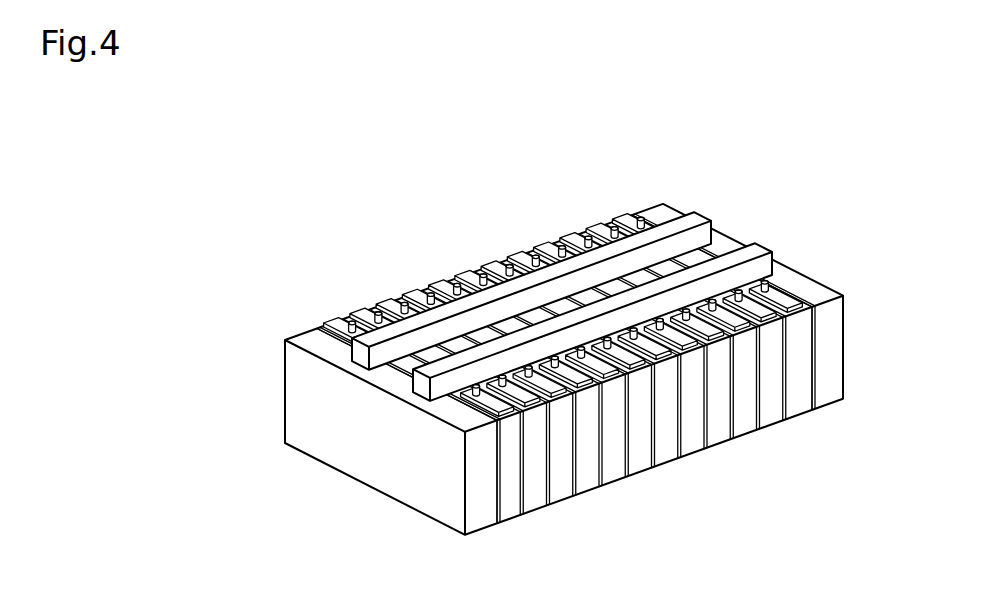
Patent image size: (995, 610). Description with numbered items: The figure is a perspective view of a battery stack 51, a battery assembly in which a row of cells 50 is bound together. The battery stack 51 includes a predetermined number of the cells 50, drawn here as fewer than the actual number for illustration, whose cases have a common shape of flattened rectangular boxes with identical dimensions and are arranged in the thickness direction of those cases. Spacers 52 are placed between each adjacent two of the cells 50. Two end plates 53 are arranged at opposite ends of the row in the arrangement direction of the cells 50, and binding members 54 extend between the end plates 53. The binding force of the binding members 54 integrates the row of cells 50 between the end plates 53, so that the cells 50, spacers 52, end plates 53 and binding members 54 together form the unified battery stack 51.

The cell 50 is at (349, 320).
The battery stack 51 is at (190, 177).
The spacer 52 is at (521, 493).
The end plate 53 is at (369, 458).
The binding member 54 is at (694, 212).